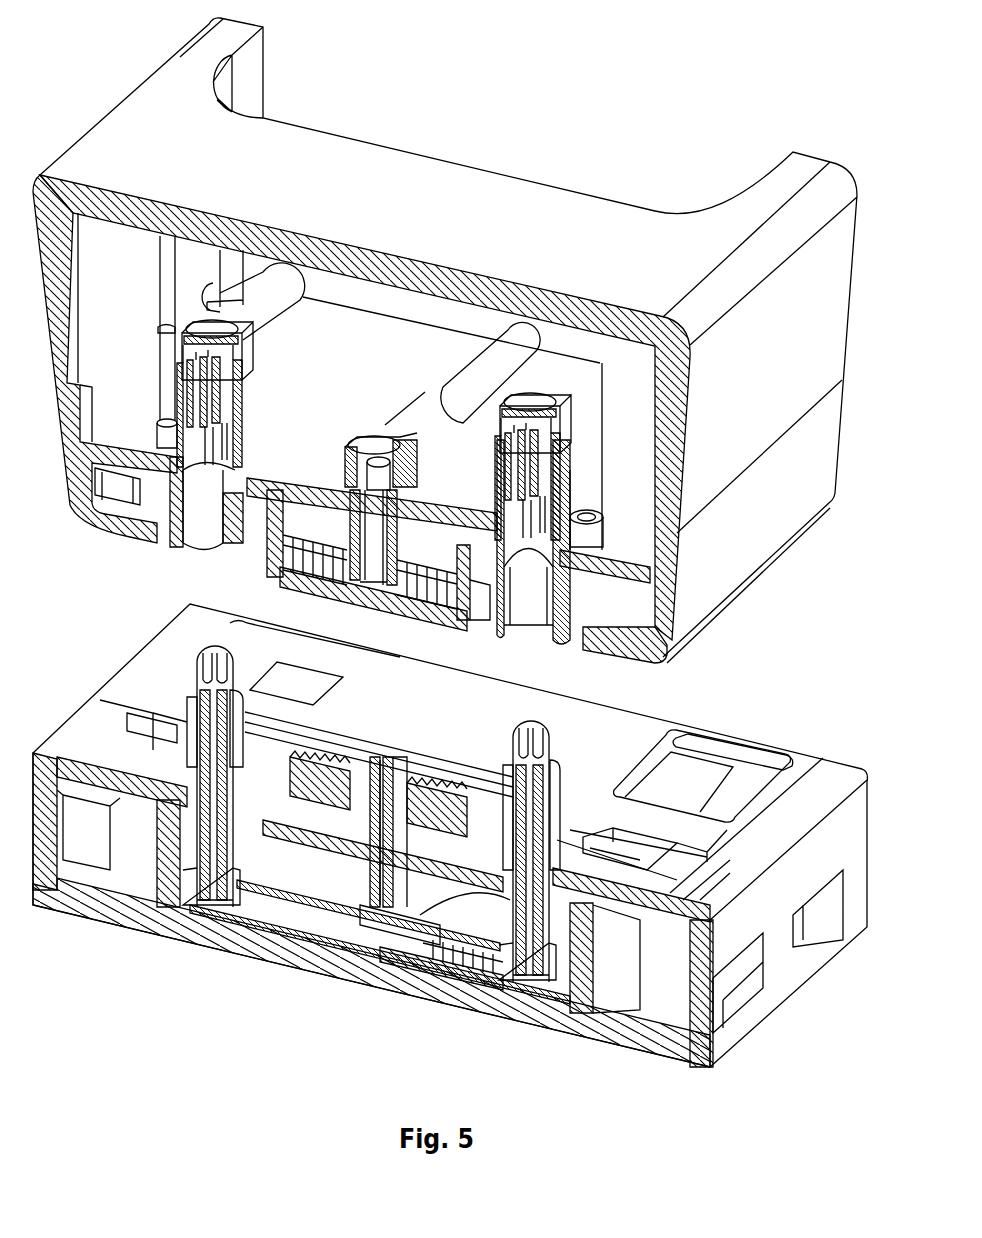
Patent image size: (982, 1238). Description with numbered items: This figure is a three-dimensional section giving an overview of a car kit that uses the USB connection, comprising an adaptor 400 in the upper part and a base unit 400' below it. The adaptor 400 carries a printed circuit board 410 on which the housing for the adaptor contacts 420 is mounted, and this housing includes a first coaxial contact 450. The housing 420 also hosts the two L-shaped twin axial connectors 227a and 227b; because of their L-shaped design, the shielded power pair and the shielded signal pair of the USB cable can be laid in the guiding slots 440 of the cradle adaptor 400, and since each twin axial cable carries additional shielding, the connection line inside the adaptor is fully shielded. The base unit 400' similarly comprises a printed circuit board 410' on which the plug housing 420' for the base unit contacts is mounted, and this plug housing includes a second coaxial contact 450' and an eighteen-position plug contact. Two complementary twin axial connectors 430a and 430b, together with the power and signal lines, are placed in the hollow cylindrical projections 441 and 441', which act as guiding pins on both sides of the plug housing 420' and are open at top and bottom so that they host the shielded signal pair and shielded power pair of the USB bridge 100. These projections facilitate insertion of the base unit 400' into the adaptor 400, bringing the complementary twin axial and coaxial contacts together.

The adaptor 400 is at (445, 340).
The printed circuit board 410 is at (401, 318).
The twin axial connector 227a is at (249, 363).
The twin axial connector 227b is at (569, 433).
The first coaxial contact 450 is at (418, 509).
The guiding slots 440 is at (207, 516).
The housing for the adaptor contacts 420 is at (372, 556).
The complementary twin axial connector 430a is at (219, 648).
The complementary twin axial connector 430b is at (534, 726).
The cylindrical projection 441 is at (144, 708).
The cylindrical projection 441' is at (557, 798).
The plug housing 420' is at (383, 786).
The printed circuit board 410' is at (703, 748).
The base unit 400' is at (463, 835).
The USB bridge 100 is at (287, 930).
The second coaxial contact 450' is at (454, 916).